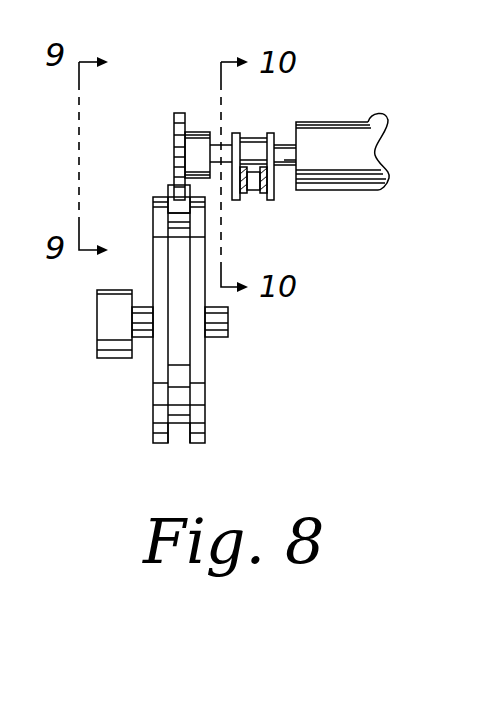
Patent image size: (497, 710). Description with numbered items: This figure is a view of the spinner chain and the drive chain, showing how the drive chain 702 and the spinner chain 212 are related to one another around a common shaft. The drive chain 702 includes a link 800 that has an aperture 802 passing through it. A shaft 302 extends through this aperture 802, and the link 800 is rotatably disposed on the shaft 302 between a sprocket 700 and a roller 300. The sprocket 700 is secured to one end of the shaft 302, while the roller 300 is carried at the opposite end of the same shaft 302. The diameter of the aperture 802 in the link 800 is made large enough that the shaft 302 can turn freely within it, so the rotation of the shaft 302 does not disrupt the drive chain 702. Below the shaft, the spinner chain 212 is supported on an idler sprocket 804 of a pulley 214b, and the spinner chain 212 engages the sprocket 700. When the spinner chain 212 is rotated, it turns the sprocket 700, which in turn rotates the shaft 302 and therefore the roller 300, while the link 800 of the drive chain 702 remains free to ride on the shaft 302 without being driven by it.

The sprocket 700 is at (184, 112).
The spinner chain 212 is at (167, 188).
The link 800 is at (250, 147).
The aperture 802 is at (278, 138).
The roller 300 is at (352, 152).
The shaft 302 is at (284, 163).
The drive chain 702 is at (252, 203).
The idler sprocket 804 is at (205, 379).
The pulley 214b is at (230, 425).